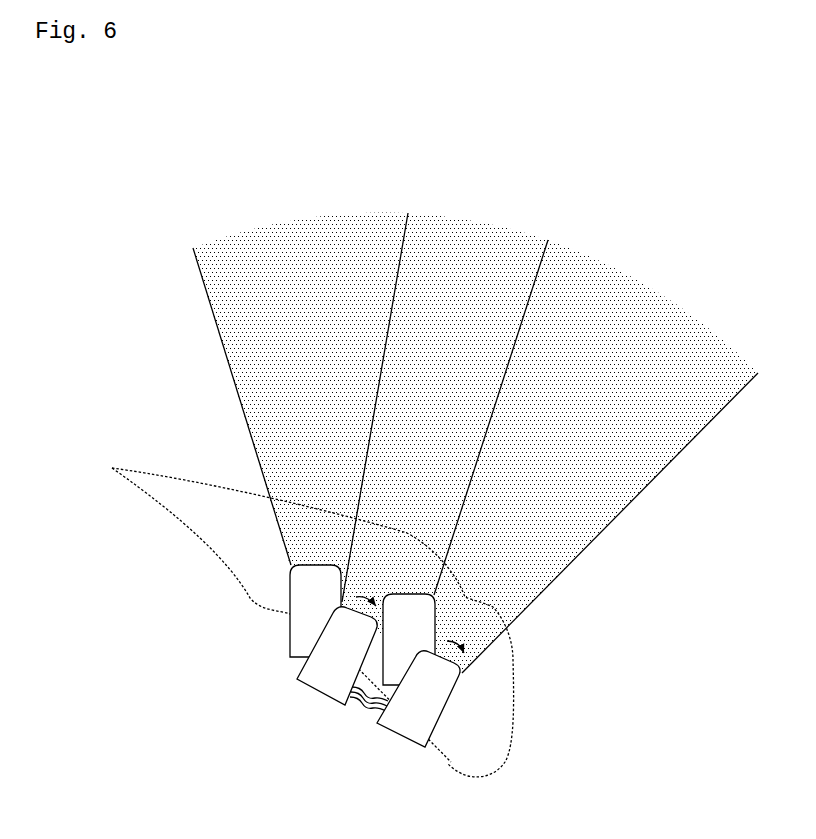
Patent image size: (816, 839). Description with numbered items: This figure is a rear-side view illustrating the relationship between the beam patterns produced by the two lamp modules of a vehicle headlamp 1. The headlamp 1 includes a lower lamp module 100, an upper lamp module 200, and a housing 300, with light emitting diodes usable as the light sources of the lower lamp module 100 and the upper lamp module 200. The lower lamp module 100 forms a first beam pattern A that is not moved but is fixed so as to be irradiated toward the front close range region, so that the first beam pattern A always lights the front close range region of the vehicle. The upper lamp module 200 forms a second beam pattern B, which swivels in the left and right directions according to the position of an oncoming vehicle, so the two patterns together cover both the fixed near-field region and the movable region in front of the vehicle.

The headlamp 1 is at (385, 622).
The lower lamp module 100 is at (284, 635).
The upper lamp module 200 is at (326, 707).
The housing 300 is at (200, 539).
The first beam pattern A is at (247, 352).
The second beam pattern B is at (620, 478).